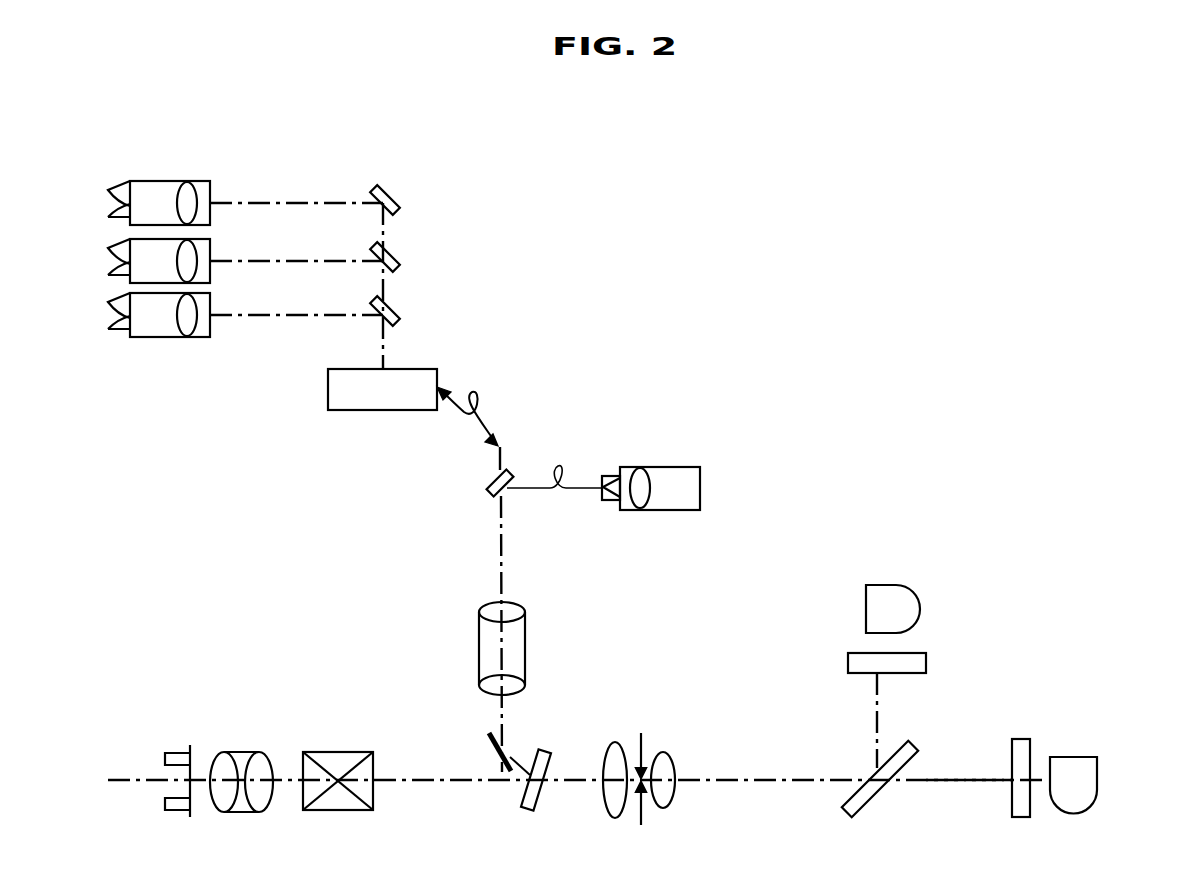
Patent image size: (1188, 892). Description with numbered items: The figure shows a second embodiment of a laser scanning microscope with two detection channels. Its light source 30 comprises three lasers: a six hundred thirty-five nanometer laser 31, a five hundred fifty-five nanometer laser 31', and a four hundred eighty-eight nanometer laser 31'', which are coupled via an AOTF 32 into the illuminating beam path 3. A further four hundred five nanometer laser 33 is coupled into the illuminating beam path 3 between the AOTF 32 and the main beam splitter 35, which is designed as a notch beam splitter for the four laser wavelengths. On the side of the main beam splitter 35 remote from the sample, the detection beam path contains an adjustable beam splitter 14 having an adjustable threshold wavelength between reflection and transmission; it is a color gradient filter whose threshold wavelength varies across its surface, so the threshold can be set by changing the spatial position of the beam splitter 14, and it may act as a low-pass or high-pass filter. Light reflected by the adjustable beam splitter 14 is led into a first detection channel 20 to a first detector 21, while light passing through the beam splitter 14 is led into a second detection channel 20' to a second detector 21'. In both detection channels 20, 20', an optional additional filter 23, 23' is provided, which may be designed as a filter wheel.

The illuminating beam path 3 is at (502, 565).
The adjustable beam splitter 14 is at (872, 792).
The first detection channel 20 is at (832, 720).
The second detection channel 20' is at (969, 821).
The first detector 21 is at (914, 585).
The second detector 21' is at (1107, 762).
The additional filter 23 is at (916, 636).
The additional filter 23' is at (1043, 748).
The light source 30 is at (192, 380).
The 635 nm laser 31 is at (164, 169).
The 555 nm laser 31' is at (127, 261).
The 488 nm laser 31'' is at (159, 353).
The AOTF 32 is at (417, 383).
The 405 nm laser 33 is at (680, 483).
The main beam splitter 35 is at (543, 757).